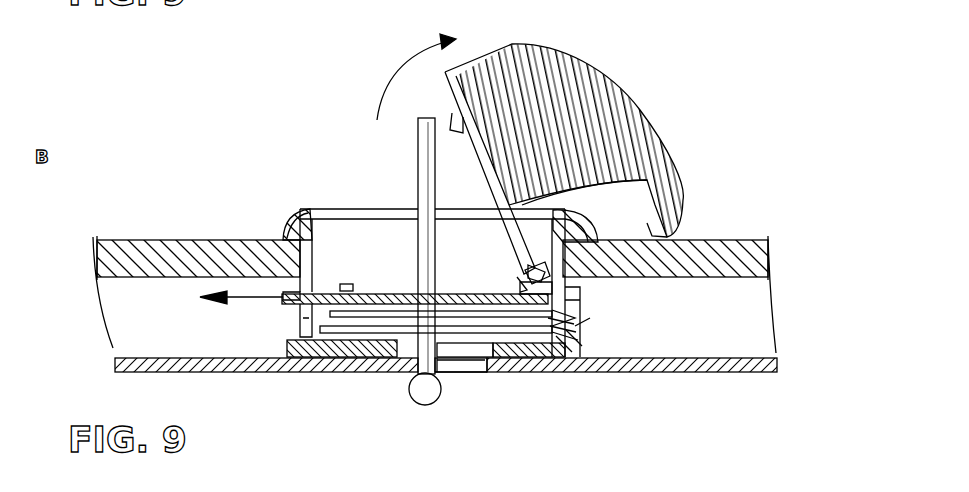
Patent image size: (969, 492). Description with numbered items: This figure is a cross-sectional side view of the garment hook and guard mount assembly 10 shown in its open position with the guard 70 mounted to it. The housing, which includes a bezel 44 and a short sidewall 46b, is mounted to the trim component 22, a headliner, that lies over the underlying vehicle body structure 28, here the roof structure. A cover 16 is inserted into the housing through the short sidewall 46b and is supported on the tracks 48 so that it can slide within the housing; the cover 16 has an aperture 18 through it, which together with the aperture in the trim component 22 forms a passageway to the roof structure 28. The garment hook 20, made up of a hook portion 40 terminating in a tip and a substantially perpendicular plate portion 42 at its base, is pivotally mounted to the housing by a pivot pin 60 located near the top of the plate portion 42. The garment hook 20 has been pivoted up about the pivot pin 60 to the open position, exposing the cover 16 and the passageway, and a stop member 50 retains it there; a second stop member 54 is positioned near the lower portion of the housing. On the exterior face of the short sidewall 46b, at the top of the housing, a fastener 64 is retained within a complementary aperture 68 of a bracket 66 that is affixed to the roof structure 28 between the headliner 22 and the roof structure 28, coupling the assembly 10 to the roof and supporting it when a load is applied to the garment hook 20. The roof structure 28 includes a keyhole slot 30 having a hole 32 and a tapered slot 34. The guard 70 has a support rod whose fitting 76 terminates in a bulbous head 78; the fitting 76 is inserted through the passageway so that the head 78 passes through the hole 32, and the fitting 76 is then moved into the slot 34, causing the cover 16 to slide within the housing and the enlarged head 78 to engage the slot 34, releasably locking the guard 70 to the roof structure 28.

The garment hook and guard mount assembly 10 is at (287, 290).
The cover 16 is at (497, 343).
The aperture 18 is at (388, 208).
The garment hook 20 is at (592, 48).
The trim component 22 is at (746, 234).
The vehicle body structure 28 is at (272, 380).
The keyhole slot 30 is at (486, 384).
The hole 32 is at (465, 366).
The tapered slot 34 is at (450, 373).
The hook portion 40 is at (683, 212).
The plate portion 42 is at (655, 188).
The bezel 44 is at (282, 212).
The sidewall 46b is at (572, 296).
The track 48 is at (382, 373).
The stop member 50 is at (503, 330).
The second stop member 54 is at (346, 283).
The pivot pin 60 is at (575, 286).
The fastener 64 is at (577, 318).
The bracket 66 is at (560, 352).
The complementary aperture 68 is at (572, 335).
The guard 70 is at (400, 160).
The fitting 76 is at (413, 147).
The bulbous head 78 is at (425, 402).